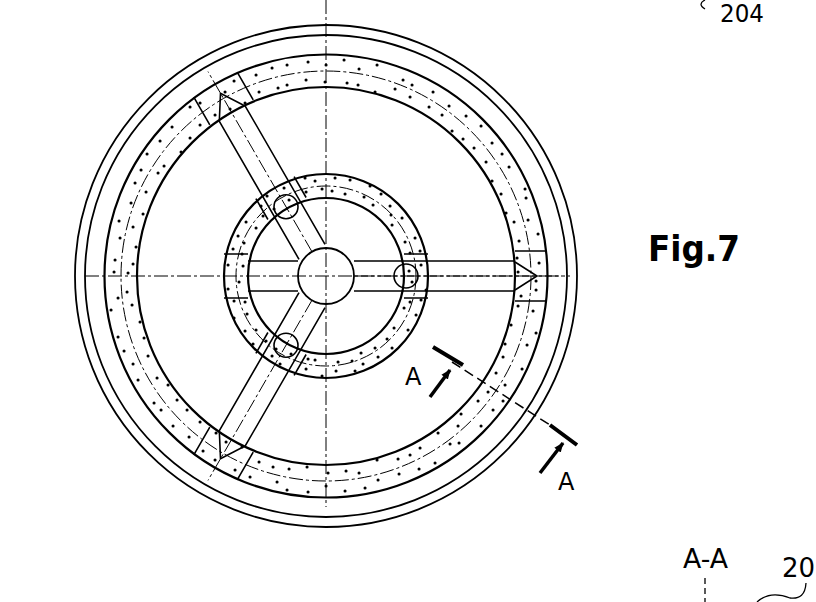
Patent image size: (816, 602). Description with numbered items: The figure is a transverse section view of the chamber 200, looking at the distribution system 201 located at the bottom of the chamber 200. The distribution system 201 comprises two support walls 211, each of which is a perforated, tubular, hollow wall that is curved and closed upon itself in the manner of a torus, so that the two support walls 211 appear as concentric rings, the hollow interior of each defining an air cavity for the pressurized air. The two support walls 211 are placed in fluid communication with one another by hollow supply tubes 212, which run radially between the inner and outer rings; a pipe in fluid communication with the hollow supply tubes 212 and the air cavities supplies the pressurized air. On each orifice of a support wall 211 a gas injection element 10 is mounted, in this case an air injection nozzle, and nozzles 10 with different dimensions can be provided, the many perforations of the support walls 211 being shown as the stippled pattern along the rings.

The chamber 200 is at (220, 50).
The distribution system 201 is at (127, 387).
The support wall 211 is at (442, 83).
The hollow supply tube 212 is at (258, 133).
The gas injection element 10 is at (390, 487).